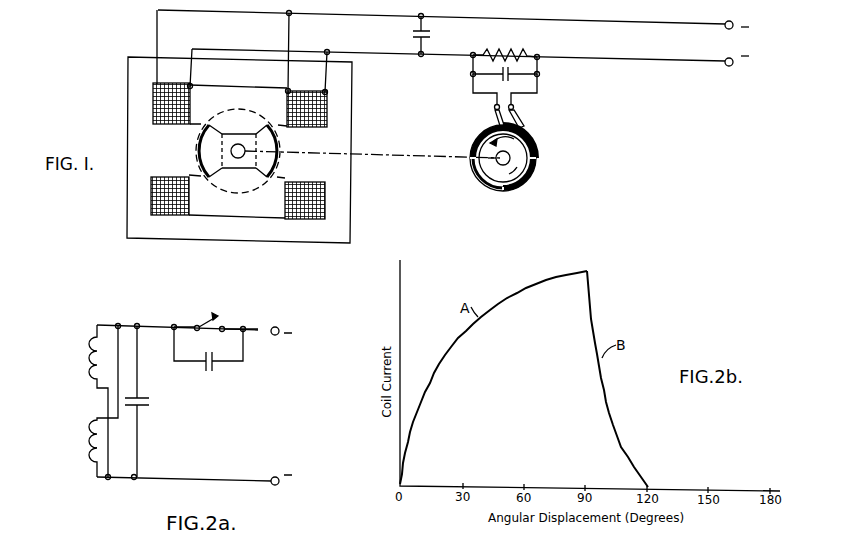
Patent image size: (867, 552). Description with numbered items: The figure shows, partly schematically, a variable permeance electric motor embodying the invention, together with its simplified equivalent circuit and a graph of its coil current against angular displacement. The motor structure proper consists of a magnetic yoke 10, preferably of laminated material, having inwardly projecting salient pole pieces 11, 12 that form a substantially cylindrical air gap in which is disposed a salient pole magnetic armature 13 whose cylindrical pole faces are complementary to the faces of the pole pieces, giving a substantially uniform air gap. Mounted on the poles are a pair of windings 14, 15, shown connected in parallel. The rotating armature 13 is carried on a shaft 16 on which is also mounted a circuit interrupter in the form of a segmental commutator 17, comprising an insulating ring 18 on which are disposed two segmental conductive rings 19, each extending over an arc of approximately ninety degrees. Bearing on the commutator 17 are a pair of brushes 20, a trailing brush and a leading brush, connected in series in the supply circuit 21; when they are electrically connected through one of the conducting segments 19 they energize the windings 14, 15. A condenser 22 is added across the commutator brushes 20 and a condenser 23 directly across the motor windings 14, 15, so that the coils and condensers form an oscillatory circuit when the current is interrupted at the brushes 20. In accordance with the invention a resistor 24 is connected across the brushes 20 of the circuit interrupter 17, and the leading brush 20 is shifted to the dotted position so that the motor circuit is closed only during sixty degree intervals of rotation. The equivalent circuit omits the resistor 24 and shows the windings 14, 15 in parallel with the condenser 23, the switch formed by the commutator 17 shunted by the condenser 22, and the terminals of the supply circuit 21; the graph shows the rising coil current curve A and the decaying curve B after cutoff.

In FIG. 1, the magnetic yoke 10 is at (128, 77).
In FIG. 1, the salient pole piece 11 is at (196, 130).
In FIG. 1, the salient pole piece 12 is at (283, 131).
In FIG. 1, the salient pole magnetic armature 13 is at (212, 168).
In FIG. 1, the winding 14 is at (153, 110).
In FIG. 2A, the winding 14 is at (89, 359).
In FIG. 1, the winding 15 is at (327, 110).
In FIG. 2A, the winding 15 is at (89, 444).
In FIG. 1, the shaft 16 is at (239, 158).
In FIG. 1, the segmental commutator 17 is at (527, 181).
In FIG. 2A, the segmental commutator 17 is at (204, 322).
In FIG. 1, the insulating ring 18 is at (513, 192).
In FIG. 1, the segmental conductive ring 19 is at (537, 153).
In FIG. 1, the brush 20 is at (562, 121).
In FIG. 1, the supply circuit 21 is at (573, 21).
In FIG. 2A, the supply circuit 21 is at (258, 329).
In FIG. 1, the condenser 22 is at (510, 72).
In FIG. 2A, the condenser 22 is at (208, 361).
In FIG. 1, the condenser 23 is at (432, 33).
In FIG. 2A, the condenser 23 is at (150, 404).
In FIG. 1, the resistor 24 is at (509, 50).